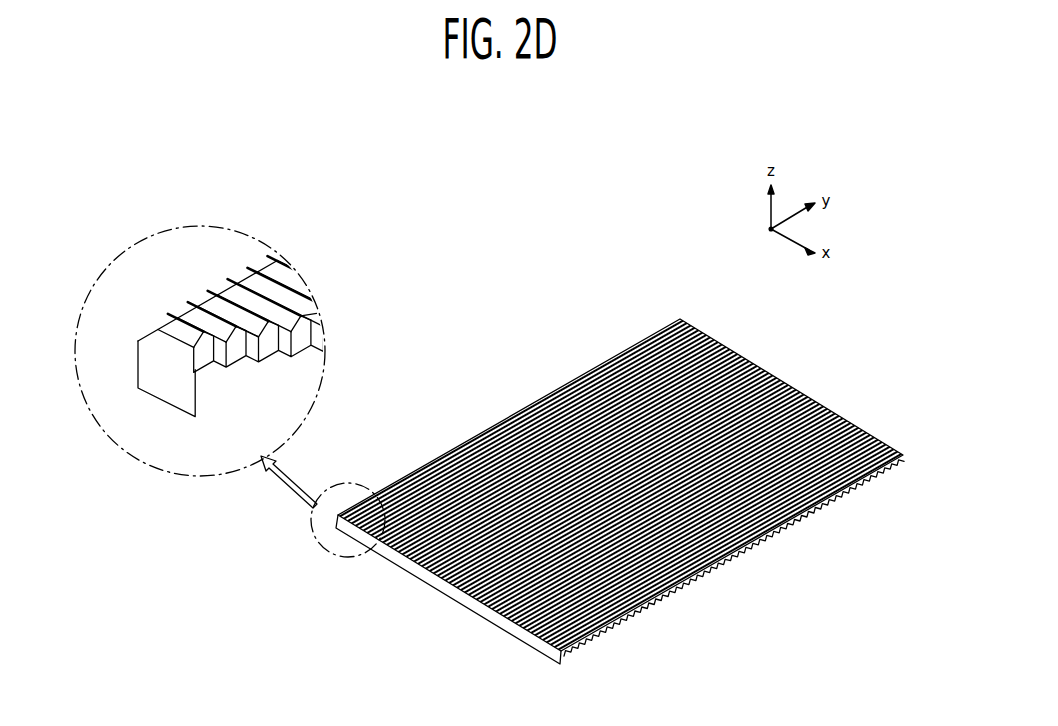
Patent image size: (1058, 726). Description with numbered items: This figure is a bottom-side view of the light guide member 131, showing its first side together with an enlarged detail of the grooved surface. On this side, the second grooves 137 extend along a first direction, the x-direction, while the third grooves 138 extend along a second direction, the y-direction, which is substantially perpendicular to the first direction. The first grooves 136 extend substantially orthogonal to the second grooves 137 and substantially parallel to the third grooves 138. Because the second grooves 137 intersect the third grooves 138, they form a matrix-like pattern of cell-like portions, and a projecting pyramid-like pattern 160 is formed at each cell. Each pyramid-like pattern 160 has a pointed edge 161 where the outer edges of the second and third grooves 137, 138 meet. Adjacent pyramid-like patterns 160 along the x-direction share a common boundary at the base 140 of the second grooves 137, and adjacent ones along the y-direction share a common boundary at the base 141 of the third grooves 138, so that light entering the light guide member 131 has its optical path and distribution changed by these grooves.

The light guide member 131 is at (897, 447).
The first grooves 136 is at (643, 603).
The second grooves 137 is at (188, 372).
The third grooves 138 is at (233, 307).
The base of the second grooves 140 is at (234, 400).
The base of the third grooves 141 is at (150, 322).
The pyramid-like pattern 160 is at (283, 272).
The pointed edge 161 is at (310, 328).